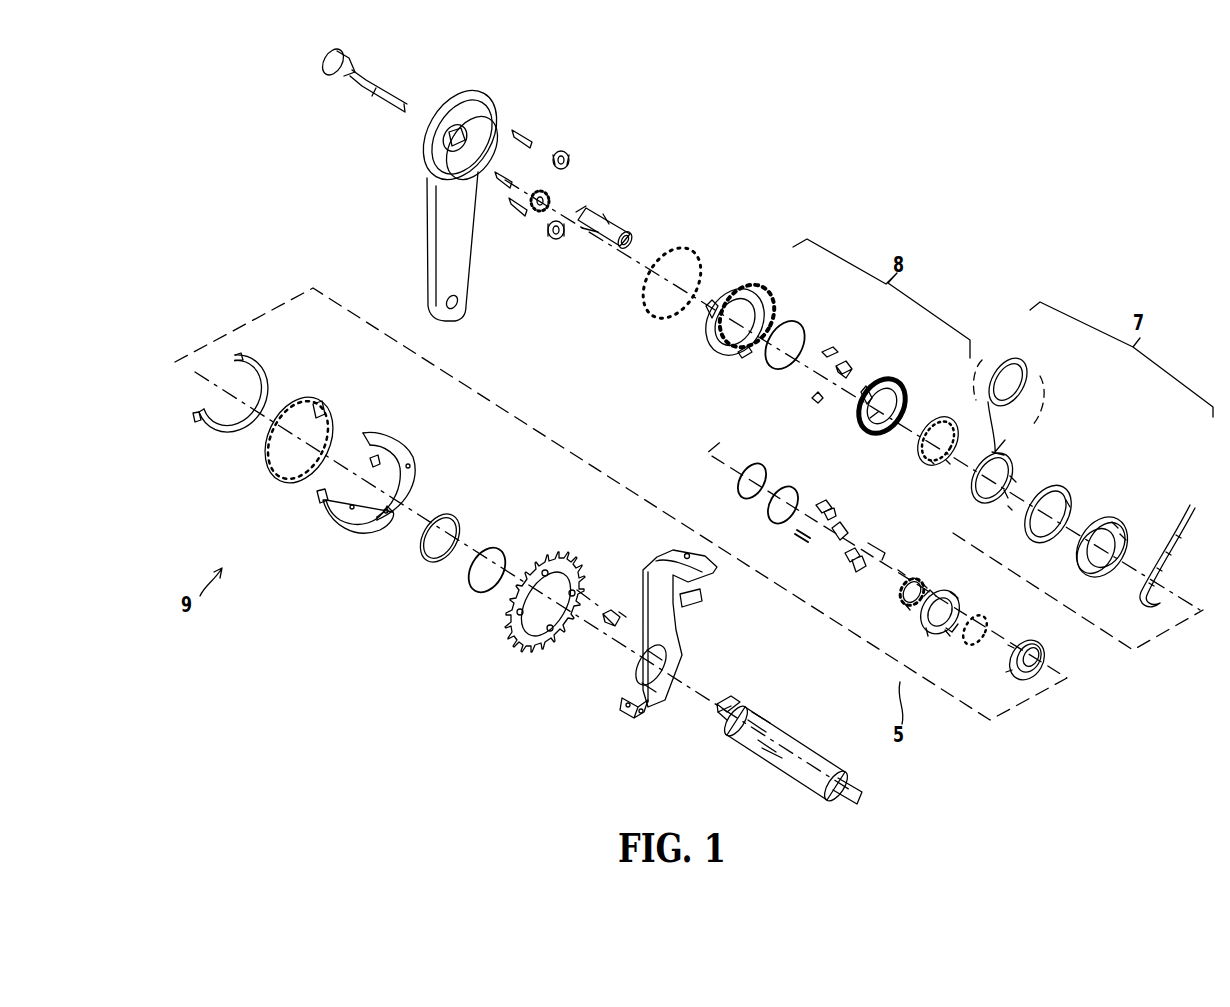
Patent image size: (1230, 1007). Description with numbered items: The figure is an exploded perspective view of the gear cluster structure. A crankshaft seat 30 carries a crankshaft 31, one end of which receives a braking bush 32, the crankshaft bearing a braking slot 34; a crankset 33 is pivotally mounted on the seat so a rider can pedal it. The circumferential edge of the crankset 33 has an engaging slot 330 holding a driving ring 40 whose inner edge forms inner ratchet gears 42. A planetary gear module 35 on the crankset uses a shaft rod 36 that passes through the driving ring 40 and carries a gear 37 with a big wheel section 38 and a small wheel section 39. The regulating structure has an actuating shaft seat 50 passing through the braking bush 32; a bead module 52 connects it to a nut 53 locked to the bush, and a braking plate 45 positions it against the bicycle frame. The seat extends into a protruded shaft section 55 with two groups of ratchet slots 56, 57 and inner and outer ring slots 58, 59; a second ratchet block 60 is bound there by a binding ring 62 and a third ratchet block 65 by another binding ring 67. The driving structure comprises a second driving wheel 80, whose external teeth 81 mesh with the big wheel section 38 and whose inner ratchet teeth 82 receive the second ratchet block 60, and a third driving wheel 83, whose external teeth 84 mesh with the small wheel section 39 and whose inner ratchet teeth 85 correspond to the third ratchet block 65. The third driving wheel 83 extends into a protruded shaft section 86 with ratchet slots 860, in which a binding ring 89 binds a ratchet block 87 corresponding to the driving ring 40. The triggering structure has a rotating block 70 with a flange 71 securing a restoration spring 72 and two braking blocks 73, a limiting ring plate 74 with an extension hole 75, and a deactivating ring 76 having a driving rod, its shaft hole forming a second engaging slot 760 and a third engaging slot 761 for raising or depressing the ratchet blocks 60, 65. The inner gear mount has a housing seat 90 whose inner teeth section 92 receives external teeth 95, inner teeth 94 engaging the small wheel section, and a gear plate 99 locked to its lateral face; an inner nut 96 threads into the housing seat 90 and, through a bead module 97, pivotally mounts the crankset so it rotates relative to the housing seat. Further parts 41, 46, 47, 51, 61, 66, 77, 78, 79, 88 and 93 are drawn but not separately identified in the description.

The crankshaft seat 30 is at (765, 765).
The crankshaft 31 is at (840, 800).
The braking bush 32 is at (612, 222).
The crankset 33 is at (427, 229).
The braking slot 34 is at (448, 108).
The engaging slot 330 is at (447, 165).
The planetary gear module 35 is at (562, 135).
The shaft rod 36 is at (503, 185).
The gear 37 is at (556, 240).
The big wheel section 38 is at (548, 236).
The small wheel section 39 is at (546, 224).
The driving ring 40 is at (740, 286).
The ratchet ring tab 41 is at (706, 312).
The inner ratchet gears 42 is at (742, 350).
The braking plate 45 is at (641, 648).
The bracket arm 46 is at (694, 578).
The bracket sleeve 47 is at (655, 698).
The actuating shaft seat 50 is at (930, 628).
The freewheel flange 51 is at (940, 632).
The bead module 52 is at (988, 618).
The nut 53 is at (1010, 676).
The protruded shaft section 55 is at (904, 598).
The ratchet slot 56 is at (902, 578).
The ratchet slot 57 is at (925, 585).
The ring slot 58 is at (907, 610).
The ring slot 59 is at (916, 580).
The second ratchet block 60 is at (850, 550).
The spring 61 is at (850, 562).
The binding ring 62 is at (770, 512).
The third ratchet block 65 is at (822, 504).
The spring 66 is at (830, 510).
The binding ring 67 is at (740, 480).
The rotating block 70 is at (1115, 525).
The flange 71 is at (1124, 537).
The restoration spring 72 is at (1190, 505).
The braking blocks 73 is at (1097, 575).
The limiting ring plate 74 is at (1070, 503).
The extension hole 75 is at (1045, 545).
The brake cone 76 is at (1010, 468).
The second engaging slot 760 is at (1015, 478).
The third engaging slot 761 is at (1022, 372).
The pin 77 is at (1010, 510).
The bearing ring 78 is at (428, 556).
The washer 79 is at (478, 592).
The second driving wheel 80 is at (946, 415).
The external teeth 81 is at (932, 465).
The inner ratchet teeth 82 is at (947, 466).
The third driving wheel 83 is at (905, 383).
The external teeth 84 is at (871, 420).
The inner ratchet teeth 85 is at (892, 432).
The protruded shaft section 86 is at (858, 410).
The ratchet block 87 is at (844, 362).
The key 88 is at (828, 348).
The binding ring 89 is at (790, 320).
The ratchet slots 860 is at (868, 388).
The housing seat 90 is at (338, 532).
The inner teeth section 92 is at (368, 456).
The upper hub shell 93 is at (323, 500).
The inner teeth 94 is at (316, 402).
The external teeth 95 is at (278, 466).
The inner nut 96 is at (197, 422).
The bead module 97 is at (695, 240).
The gear plate 99 is at (517, 642).